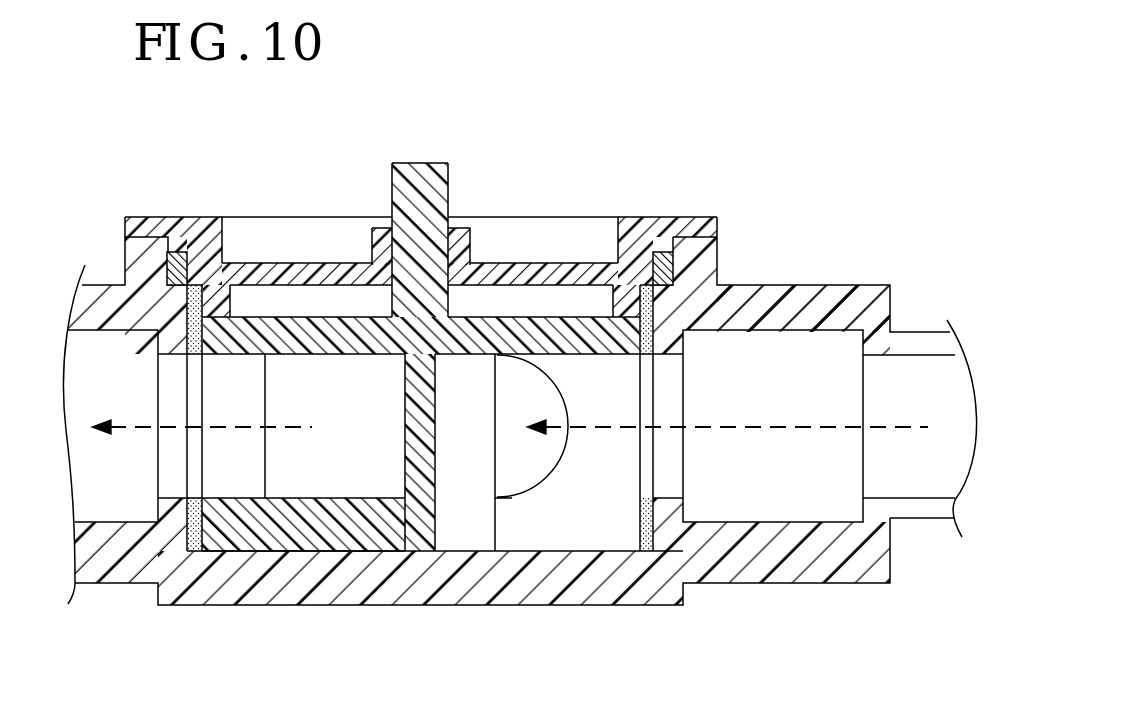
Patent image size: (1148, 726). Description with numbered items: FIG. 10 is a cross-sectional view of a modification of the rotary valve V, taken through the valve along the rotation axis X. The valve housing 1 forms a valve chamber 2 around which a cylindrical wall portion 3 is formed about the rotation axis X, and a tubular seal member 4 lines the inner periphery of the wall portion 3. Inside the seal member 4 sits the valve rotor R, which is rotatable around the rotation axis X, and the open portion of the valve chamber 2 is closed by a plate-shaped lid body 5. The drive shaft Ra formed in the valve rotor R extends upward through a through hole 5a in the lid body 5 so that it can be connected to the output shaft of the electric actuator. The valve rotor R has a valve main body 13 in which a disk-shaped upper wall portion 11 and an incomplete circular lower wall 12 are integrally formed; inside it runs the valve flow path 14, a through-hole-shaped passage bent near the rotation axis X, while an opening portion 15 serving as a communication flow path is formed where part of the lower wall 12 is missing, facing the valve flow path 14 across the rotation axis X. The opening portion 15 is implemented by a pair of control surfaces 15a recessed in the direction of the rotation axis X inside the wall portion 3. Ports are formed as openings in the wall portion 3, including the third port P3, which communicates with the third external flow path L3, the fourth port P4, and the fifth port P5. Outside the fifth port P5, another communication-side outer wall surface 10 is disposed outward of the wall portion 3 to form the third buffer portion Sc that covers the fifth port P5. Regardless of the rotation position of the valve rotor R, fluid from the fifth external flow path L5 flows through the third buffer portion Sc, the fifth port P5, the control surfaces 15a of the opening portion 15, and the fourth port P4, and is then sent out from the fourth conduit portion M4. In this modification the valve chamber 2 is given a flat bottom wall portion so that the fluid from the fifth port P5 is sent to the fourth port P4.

The valve housing 1 is at (767, 300).
The valve chamber 2 is at (175, 464).
The wall portion 3 is at (667, 507).
The seal member 4 is at (637, 535).
The lid body 5 is at (196, 217).
The through hole 5a is at (435, 237).
The communication-side outer wall surface 10 is at (893, 550).
The upper wall portion 11 is at (276, 314).
The lower wall 12 is at (370, 575).
The valve main body 13 is at (186, 328).
The valve flow path 14 is at (366, 444).
The opening portion 15 is at (614, 404).
The control surfaces 15a is at (473, 448).
The rotation axis X is at (420, 200).
The rotary valve V is at (712, 140).
The drive shaft Ra is at (392, 184).
The valve rotor R is at (530, 316).
The fifth external flow path L5 is at (905, 413).
The third external flow path L3 is at (143, 420).
The fifth port P5 is at (680, 410).
The fourth port P4 is at (545, 446).
The third port P3 is at (176, 467).
The fourth conduit portion M4 is at (929, 512).
The third buffer portion Sc is at (807, 483).